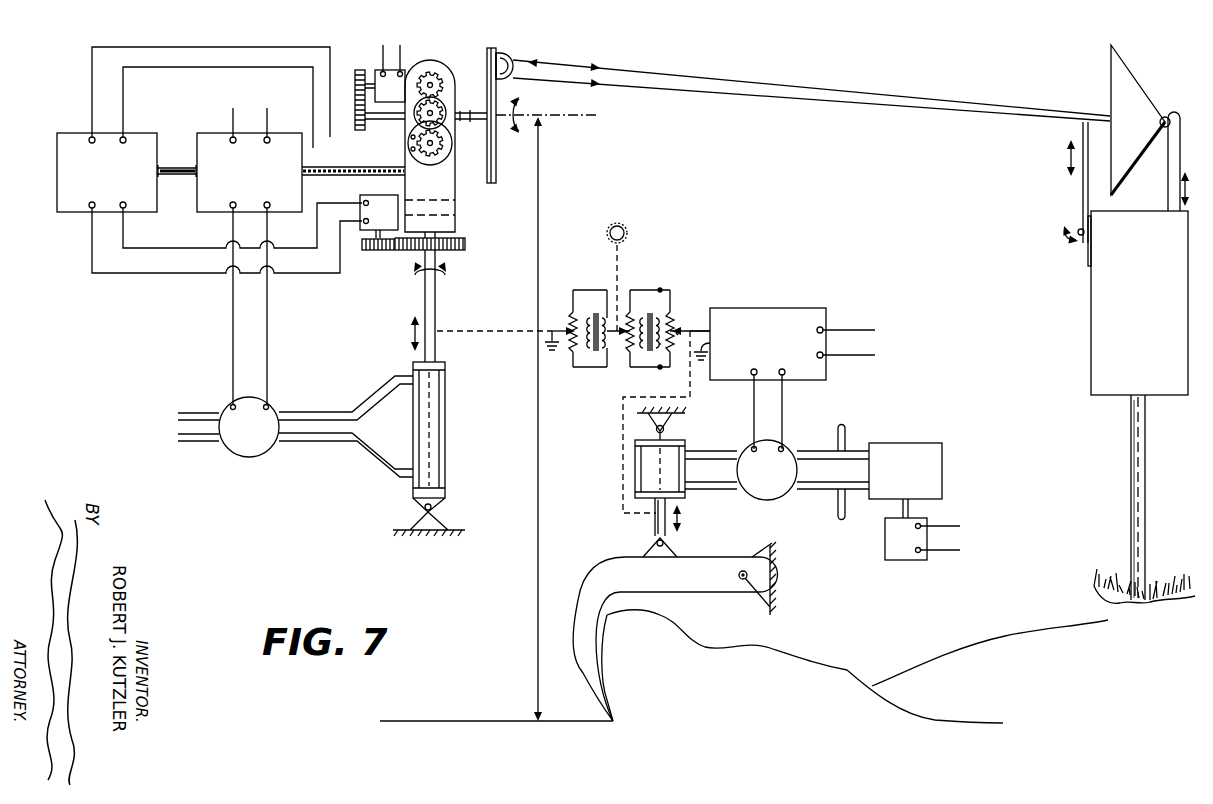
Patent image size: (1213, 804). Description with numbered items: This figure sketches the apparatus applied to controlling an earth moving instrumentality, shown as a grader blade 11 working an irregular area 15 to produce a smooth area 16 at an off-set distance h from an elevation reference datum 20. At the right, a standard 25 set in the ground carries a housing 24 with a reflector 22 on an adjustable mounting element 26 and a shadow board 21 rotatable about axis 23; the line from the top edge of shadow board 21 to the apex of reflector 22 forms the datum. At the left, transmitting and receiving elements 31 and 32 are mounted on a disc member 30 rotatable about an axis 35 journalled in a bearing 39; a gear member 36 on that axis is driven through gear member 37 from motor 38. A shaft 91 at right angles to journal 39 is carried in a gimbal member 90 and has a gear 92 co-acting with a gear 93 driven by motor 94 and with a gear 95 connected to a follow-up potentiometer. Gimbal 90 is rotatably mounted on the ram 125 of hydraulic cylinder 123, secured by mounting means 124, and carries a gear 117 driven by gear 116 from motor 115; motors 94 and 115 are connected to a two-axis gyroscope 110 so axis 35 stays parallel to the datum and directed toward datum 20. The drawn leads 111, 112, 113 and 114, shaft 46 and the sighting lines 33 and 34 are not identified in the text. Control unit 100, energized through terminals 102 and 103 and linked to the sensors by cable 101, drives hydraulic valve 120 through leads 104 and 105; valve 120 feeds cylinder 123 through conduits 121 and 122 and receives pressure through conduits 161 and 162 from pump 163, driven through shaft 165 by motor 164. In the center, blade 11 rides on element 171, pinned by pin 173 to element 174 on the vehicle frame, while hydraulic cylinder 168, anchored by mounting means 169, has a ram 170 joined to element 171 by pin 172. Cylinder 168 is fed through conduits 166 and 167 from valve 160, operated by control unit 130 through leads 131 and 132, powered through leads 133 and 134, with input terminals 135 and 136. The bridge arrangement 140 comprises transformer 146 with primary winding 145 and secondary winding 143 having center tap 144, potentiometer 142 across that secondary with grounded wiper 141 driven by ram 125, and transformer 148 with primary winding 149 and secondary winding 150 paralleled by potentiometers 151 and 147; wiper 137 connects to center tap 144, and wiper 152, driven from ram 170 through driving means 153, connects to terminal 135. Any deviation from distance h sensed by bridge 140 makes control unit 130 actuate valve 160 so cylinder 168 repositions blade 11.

The grader blade 11 is at (598, 683).
The irregular area 15 is at (847, 668).
The smooth area 16 is at (447, 721).
The elevation reference datum 20 is at (1163, 48).
The shadow board 21 is at (1083, 134).
The reflector 22 is at (1142, 92).
The axis 23 is at (1078, 230).
The housing 24 is at (1091, 302).
The standard 25 is at (1130, 482).
The adjustable mounting element 26 is at (1168, 184).
The disc member 30 is at (546, 418).
The transmitting element 31 is at (499, 56).
The receiving element 32 is at (513, 62).
The light beam 33 is at (595, 66).
The beam lines 34 is at (582, 74).
The axis of rotation 35 is at (518, 97).
The gear member 36 is at (365, 130).
The gear member 37 is at (358, 70).
The motor 38 is at (405, 70).
The journal 39 is at (496, 128).
The shaft 46 is at (470, 119).
The gimbal member 90 is at (456, 208).
The shaft 91 is at (440, 104).
The gear 92 is at (437, 113).
The gear 93 is at (444, 150).
The motor 94 is at (437, 165).
The gear 95 is at (440, 70).
The control unit 100 is at (203, 130).
The cable 101 is at (325, 171).
The terminal 102 is at (231, 102).
The terminal 103 is at (268, 111).
The lead 104 is at (233, 215).
The lead 105 is at (268, 217).
The two axis gyroscope 110 is at (123, 131).
The lead 111 is at (123, 102).
The lead 112 is at (92, 78).
The lead 113 is at (140, 273).
The lead 114 is at (145, 248).
The motor 115 is at (375, 195).
The gear 116 is at (378, 250).
The gear 117 is at (465, 247).
The hydraulic valve 120 is at (270, 407).
The conduit 121 is at (320, 410).
The conduit 122 is at (325, 446).
The hydraulic cylinder 123 is at (437, 418).
The mounting means 124 is at (447, 518).
The ram 125 is at (438, 308).
The control unit 130 is at (780, 308).
The lead 131 is at (783, 392).
The lead 132 is at (756, 413).
The lead 133 is at (840, 329).
The lead 134 is at (838, 356).
The input terminal 135 is at (700, 328).
The input terminal 136 is at (700, 360).
The potentiometer wiper 137 is at (626, 228).
The bridge arrangement 140 is at (680, 255).
The potentiometer wiper 141 is at (503, 335).
The potentiometer 142 is at (571, 352).
The secondary winding 143 is at (594, 368).
The center tap 144 is at (603, 316).
The primary winding 145 is at (588, 352).
The transformer 146 is at (589, 325).
The potentiometer 147 is at (656, 348).
The transformer 148 is at (650, 358).
The primary winding 149 is at (642, 318).
The secondary winding 150 is at (670, 316).
The potentiometer 151 is at (680, 335).
The potentiometer wiper 152 is at (662, 343).
The driving means 153 is at (688, 402).
The hydraulic valve 160 is at (790, 448).
The conduit 161 is at (858, 452).
The conduit 162 is at (850, 490).
The pump 163 is at (930, 443).
The motor 164 is at (928, 522).
The shaft 165 is at (910, 505).
The conduit 166 is at (700, 492).
The conduit 167 is at (700, 452).
The hydraulic cylinder 168 is at (635, 466).
The mounting means 169 is at (648, 420).
The ram 170 is at (623, 517).
The element 171 is at (676, 553).
The pin 172 is at (655, 543).
The pin 173 is at (746, 580).
The element 174 is at (778, 556).